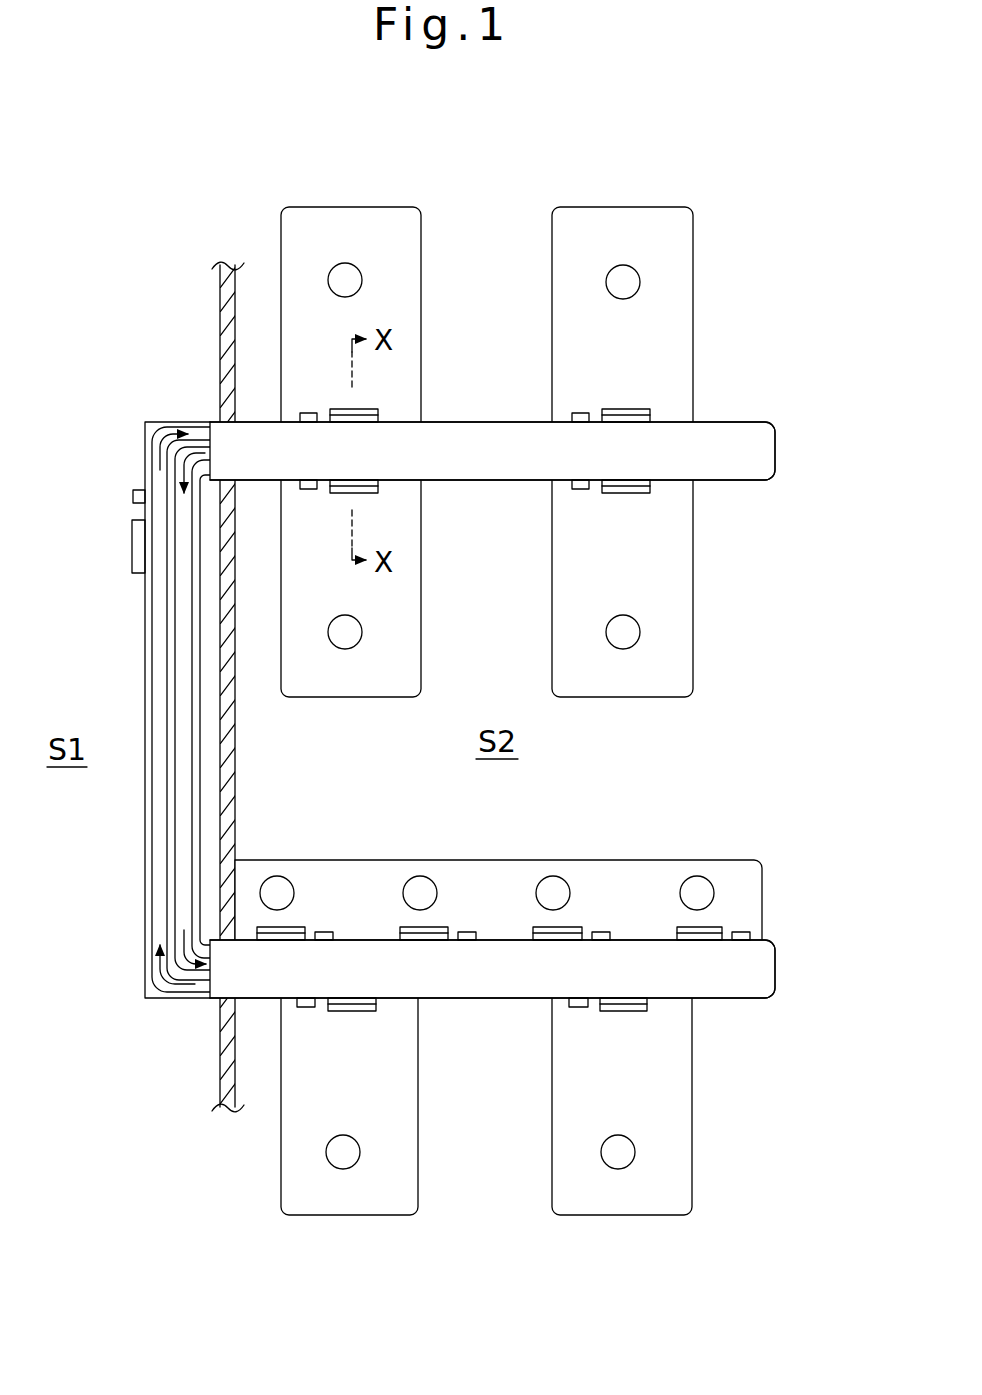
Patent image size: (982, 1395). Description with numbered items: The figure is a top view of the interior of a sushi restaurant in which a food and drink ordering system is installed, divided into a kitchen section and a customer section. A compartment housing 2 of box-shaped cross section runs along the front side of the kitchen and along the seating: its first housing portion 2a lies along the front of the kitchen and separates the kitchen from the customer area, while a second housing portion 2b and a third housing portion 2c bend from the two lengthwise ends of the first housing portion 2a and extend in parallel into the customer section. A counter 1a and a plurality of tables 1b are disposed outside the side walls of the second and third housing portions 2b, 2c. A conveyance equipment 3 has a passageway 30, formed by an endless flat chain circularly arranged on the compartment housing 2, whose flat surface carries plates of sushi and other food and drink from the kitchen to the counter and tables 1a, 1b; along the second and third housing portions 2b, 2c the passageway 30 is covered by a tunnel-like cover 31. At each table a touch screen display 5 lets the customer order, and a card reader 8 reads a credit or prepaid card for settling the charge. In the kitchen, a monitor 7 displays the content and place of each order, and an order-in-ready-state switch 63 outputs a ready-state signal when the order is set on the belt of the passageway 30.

The counter 1a is at (757, 900).
The tables 1b is at (367, 206).
The compartment housing 2 is at (454, 711).
The first housing portion 2a is at (143, 813).
The second housing portion 2b is at (778, 451).
The third housing portion 2c is at (778, 968).
The conveyance equipment 3 is at (143, 628).
The passageway 30 is at (183, 687).
The tunnel-like cover 31 is at (722, 428).
The touch screen display 5 is at (378, 408).
The monitor 7 is at (132, 548).
The card reader 8 is at (306, 412).
The order-in-ready-state switch 63 is at (133, 497).